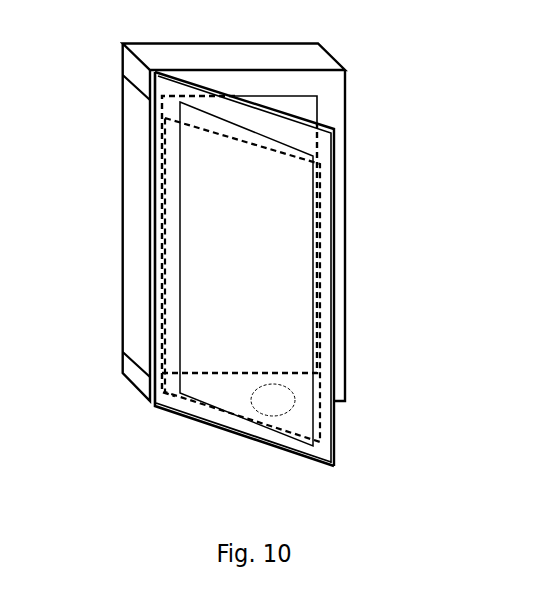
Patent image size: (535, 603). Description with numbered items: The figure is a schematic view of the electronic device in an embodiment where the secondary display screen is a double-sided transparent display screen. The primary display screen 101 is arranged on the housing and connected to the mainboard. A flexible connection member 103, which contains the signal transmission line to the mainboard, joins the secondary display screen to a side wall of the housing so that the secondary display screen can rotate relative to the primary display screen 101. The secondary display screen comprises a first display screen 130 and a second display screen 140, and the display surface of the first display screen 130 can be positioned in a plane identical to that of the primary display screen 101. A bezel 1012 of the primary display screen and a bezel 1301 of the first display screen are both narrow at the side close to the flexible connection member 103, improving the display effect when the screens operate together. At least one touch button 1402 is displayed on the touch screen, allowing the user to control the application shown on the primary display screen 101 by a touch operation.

The primary display screen 101 is at (307, 104).
The flexible connection member 103 is at (138, 163).
The bezel of the primary display screen 1012 is at (162, 112).
The first display screen 130 is at (323, 430).
The bezel of the first display screen 1301 is at (167, 388).
The second display screen 140 is at (176, 398).
The touch button 1402 is at (272, 402).